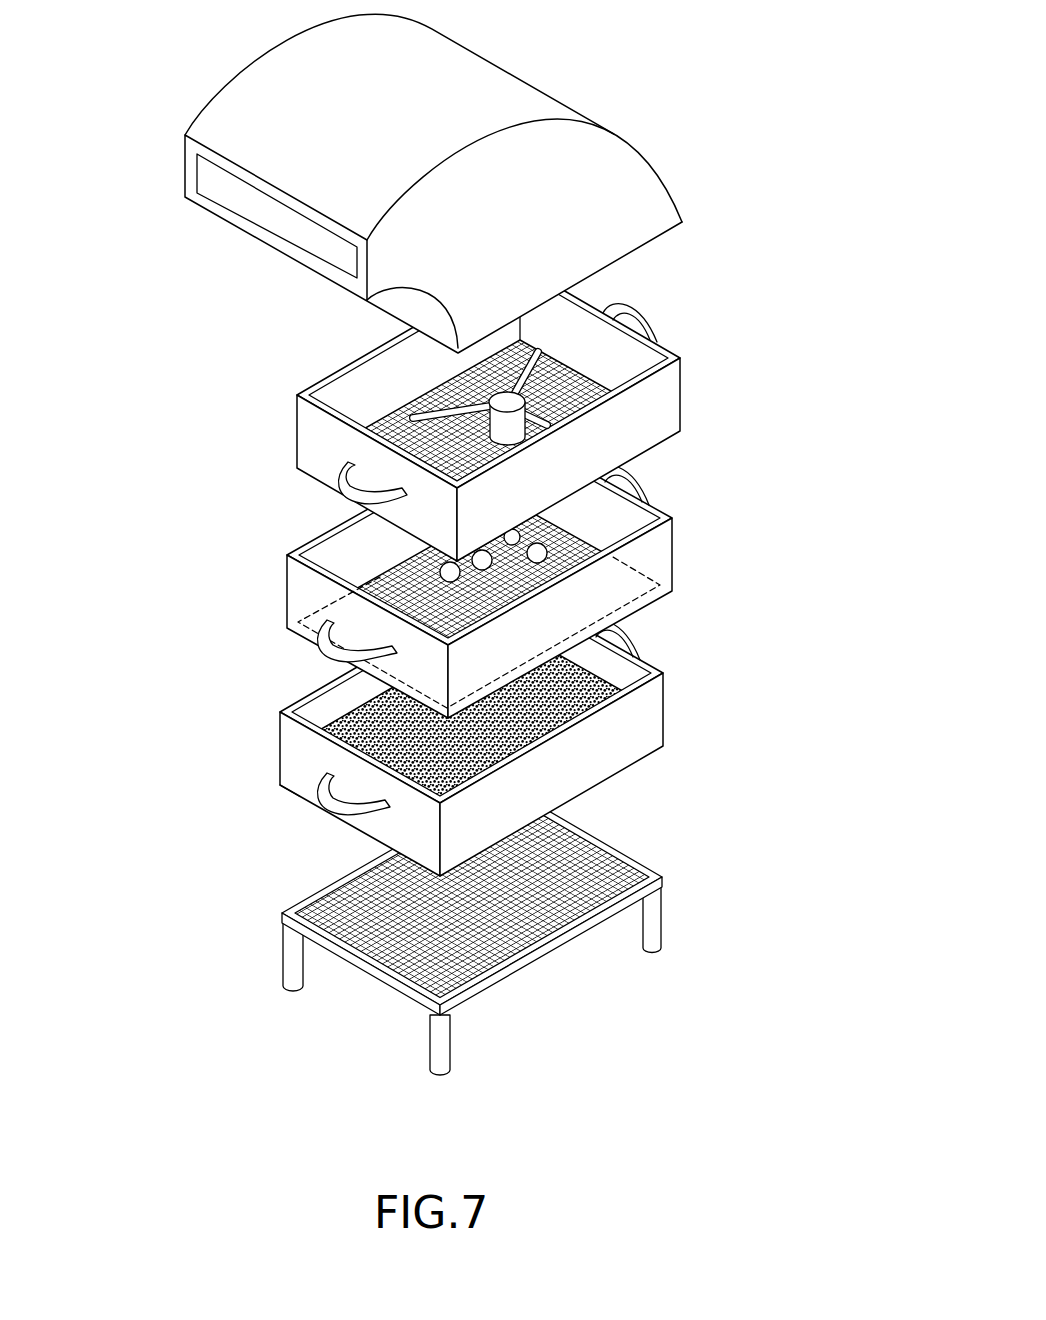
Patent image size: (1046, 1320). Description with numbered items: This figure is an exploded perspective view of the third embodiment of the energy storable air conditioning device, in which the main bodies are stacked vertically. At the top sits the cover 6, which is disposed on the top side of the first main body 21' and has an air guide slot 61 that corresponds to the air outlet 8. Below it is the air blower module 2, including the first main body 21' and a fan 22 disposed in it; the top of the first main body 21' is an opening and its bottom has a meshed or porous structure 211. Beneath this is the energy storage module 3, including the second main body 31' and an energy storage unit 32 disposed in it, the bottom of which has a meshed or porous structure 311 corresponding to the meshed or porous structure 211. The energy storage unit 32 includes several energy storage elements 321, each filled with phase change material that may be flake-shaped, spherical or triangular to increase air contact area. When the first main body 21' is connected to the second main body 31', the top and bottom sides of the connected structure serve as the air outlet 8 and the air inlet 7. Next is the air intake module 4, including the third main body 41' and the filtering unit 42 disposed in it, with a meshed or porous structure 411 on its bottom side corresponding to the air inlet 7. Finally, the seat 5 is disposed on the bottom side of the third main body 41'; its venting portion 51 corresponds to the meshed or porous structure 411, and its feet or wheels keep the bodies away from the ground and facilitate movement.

The cover 6 is at (420, 176).
The air guide slot 61 is at (247, 207).
The air blower module 2 is at (456, 413).
The first main body 21' is at (324, 466).
The meshed or porous structure 211 is at (398, 430).
The fan 22 is at (497, 404).
The air outlet 8 is at (632, 332).
The energy storage module 3 is at (474, 573).
The second main body 31' is at (313, 626).
The meshed or porous structure 311 is at (380, 583).
The energy storage unit 32 is at (579, 552).
The energy storage element 321 is at (542, 556).
The air inlet 7 is at (640, 568).
The air intake module 4 is at (421, 729).
The third main body 41' is at (309, 780).
The meshed or porous structure 411 is at (328, 740).
The filtering unit 42 is at (362, 708).
The seat 5 is at (472, 930).
The venting portion 51 is at (463, 962).